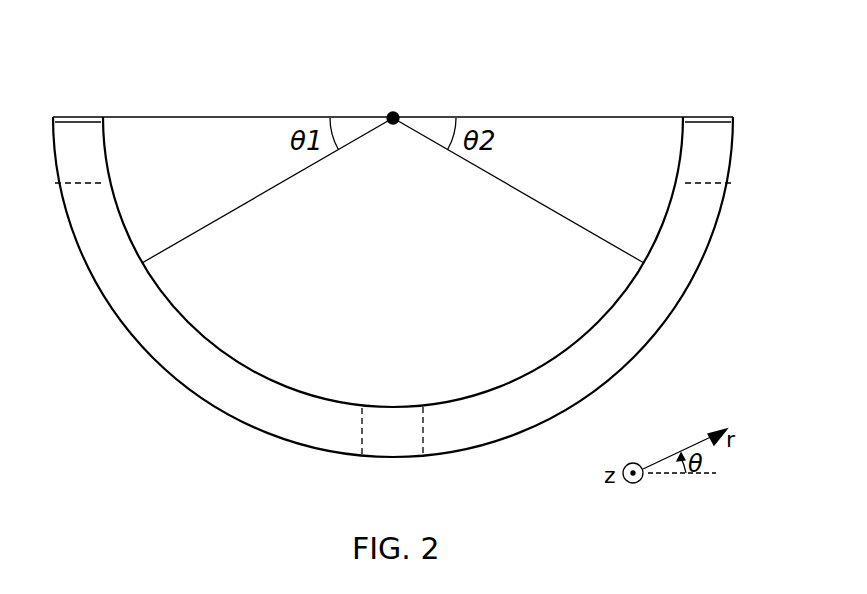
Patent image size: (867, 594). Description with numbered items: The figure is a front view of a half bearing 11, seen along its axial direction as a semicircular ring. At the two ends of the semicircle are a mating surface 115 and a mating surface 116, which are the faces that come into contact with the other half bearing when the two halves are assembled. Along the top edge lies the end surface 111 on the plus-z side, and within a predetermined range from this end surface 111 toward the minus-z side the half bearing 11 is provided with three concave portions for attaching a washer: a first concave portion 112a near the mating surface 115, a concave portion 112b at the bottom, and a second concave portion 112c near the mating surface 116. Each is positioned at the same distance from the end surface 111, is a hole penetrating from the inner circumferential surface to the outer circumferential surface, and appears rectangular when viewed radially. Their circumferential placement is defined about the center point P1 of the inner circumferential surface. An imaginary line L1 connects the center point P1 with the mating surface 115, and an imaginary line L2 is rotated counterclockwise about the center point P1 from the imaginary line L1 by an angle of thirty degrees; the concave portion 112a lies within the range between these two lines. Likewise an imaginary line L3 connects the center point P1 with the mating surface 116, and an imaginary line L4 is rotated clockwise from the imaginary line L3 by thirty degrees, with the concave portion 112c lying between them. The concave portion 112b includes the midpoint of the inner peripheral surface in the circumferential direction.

The half bearing 11 is at (573, 70).
The end surface 111 is at (625, 340).
The concave portion 112a is at (103, 183).
The concave portion 112b is at (420, 420).
The concave portion 112c is at (687, 183).
The mating surface 115 is at (90, 116).
The mating surface 116 is at (696, 116).
The center point P1 is at (398, 112).
The imaginary line L1 is at (268, 117).
The imaginary line L2 is at (251, 201).
The imaginary line L3 is at (518, 117).
The imaginary line L4 is at (535, 201).